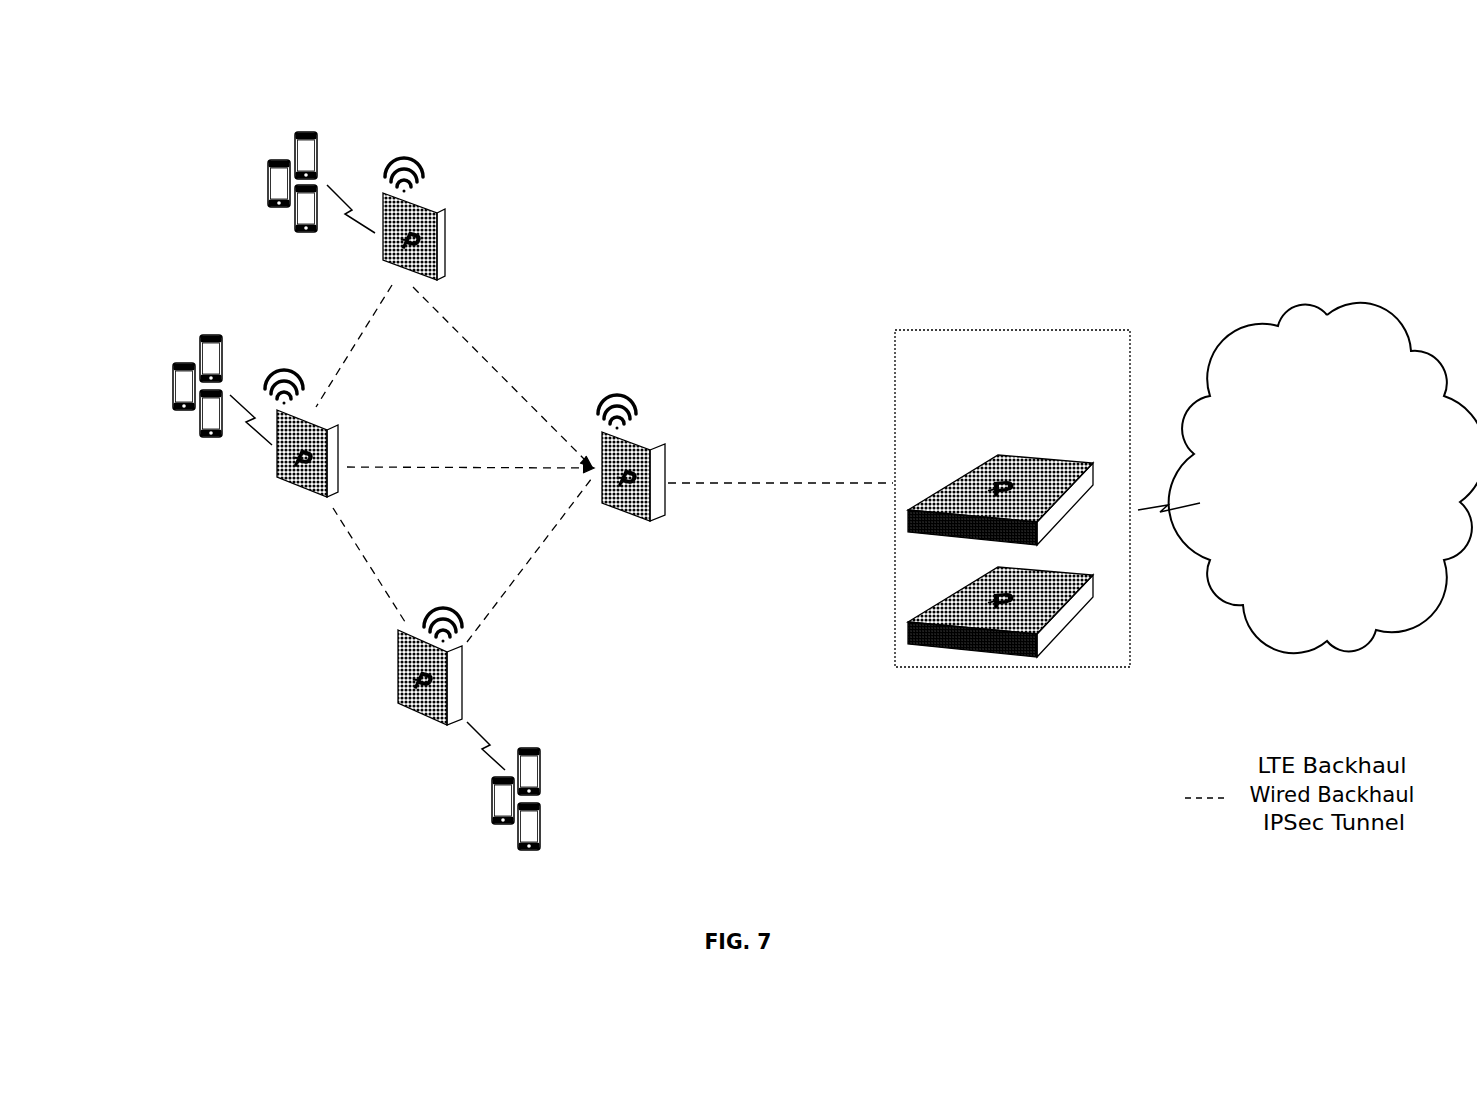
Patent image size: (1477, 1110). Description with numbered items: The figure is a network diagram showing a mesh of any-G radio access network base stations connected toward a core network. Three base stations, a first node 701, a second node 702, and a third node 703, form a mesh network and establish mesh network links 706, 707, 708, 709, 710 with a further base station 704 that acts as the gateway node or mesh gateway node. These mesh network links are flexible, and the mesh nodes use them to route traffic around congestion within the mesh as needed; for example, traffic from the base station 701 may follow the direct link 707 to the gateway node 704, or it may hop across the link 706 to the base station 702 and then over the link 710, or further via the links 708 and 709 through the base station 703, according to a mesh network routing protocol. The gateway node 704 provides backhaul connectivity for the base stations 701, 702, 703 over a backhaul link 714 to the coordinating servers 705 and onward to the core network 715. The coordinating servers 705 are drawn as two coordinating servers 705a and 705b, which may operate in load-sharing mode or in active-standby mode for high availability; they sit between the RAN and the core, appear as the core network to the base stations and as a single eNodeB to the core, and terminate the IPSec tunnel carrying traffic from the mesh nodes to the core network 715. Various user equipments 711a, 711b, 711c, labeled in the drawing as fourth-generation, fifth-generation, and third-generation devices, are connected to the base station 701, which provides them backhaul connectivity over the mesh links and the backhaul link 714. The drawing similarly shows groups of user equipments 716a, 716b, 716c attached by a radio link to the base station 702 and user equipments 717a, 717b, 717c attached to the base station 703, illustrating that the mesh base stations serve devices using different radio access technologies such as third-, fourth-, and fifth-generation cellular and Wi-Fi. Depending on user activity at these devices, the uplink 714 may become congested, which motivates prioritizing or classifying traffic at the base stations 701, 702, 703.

The node 1 base station 701 is at (433, 207).
The node 2 base station 702 is at (277, 485).
The node 3 base station 703 is at (412, 720).
The gateway node base station 704 is at (650, 440).
The coordinating servers 705 is at (1012, 469).
The first coordinating server 705a is at (1070, 457).
The second coordinating server 705b is at (1070, 567).
The mesh network link 706 is at (353, 357).
The mesh network link 707 is at (517, 380).
The mesh network link 708 is at (358, 558).
The mesh network link 709 is at (540, 552).
The mesh network link 710 is at (463, 463).
The user equipment 711a is at (265, 167).
The user equipment 711b is at (292, 232).
The user equipment 711c is at (323, 152).
The backhaul link 714 is at (797, 492).
The core network 715 is at (1332, 320).
The 4G UE 716a is at (172, 390).
The 3G UE 716b is at (208, 332).
The 5G UE 716c is at (195, 420).
The Wi-Fi UE 717a is at (487, 792).
The 3G UE 717b is at (532, 855).
The 4G UE 717c is at (530, 745).